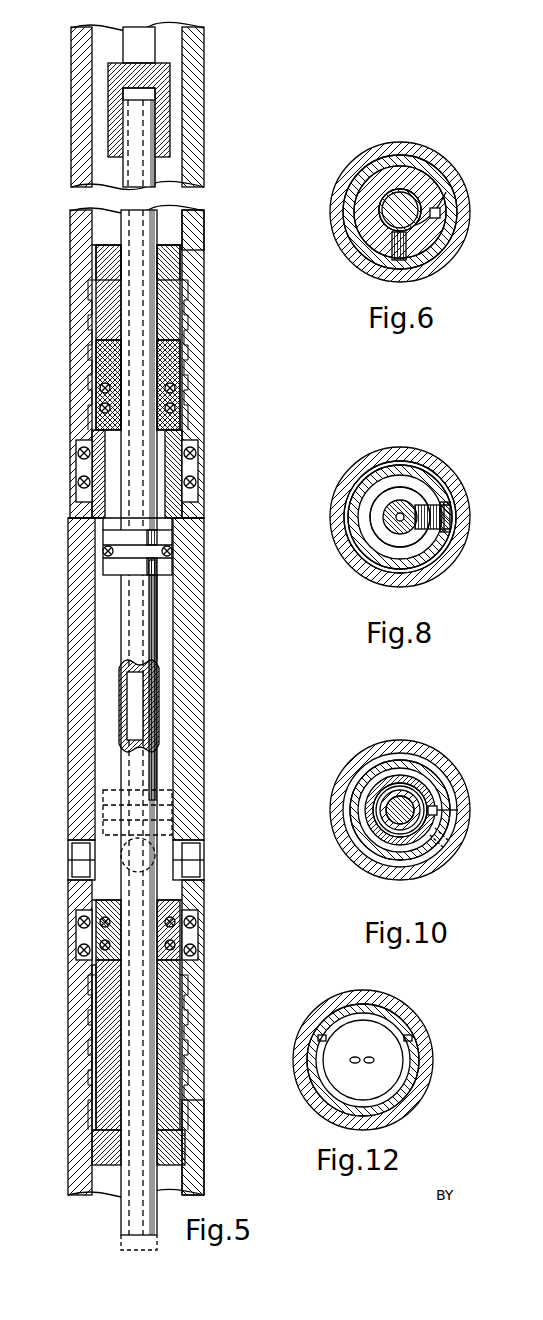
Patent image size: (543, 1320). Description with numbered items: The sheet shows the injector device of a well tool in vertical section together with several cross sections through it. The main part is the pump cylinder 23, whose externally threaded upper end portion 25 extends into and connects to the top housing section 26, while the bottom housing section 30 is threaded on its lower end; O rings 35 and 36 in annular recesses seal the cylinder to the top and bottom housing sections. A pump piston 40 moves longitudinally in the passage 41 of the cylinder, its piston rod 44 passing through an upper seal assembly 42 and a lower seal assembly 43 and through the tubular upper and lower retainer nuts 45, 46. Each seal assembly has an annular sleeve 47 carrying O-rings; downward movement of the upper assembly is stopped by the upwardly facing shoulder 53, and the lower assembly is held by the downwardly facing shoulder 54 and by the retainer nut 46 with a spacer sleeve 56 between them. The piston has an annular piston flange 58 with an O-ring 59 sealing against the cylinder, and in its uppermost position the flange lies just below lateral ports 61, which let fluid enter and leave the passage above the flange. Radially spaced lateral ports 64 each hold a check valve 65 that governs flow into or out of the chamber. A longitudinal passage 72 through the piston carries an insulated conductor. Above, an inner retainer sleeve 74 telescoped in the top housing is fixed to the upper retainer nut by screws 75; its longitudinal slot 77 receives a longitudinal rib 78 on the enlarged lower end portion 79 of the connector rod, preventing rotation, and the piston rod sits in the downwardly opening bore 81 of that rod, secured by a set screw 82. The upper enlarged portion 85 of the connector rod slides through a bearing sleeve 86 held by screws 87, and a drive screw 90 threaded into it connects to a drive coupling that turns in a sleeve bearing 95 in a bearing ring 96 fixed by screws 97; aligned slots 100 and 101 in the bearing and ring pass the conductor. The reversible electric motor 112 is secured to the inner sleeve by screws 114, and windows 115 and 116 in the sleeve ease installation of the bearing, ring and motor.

In FIG. 5, the downwardly opening bore 81 is at (123, 114).
In FIG. 5, the screws 75 is at (196, 240).
In FIG. 5, the upper retainer nut 45 is at (175, 278).
In FIG. 5, the top housing section 26 is at (195, 290).
In FIG. 6, the top housing section 26 is at (360, 162).
In FIG. 10, the top housing section 26 is at (448, 768).
In FIG. 5, the upper seal assembly 42 is at (176, 365).
In FIG. 5, the externally threaded upper end portion 25 is at (178, 382).
In FIG. 5, the upwardly facing annular shoulder 53 is at (188, 418).
In FIG. 5, the O rings 35 is at (198, 480).
In FIG. 5, the annular sleeve 47 is at (100, 388).
In FIG. 5, the lateral ports 61 is at (92, 510).
In FIG. 5, the annular piston flange 58 is at (172, 536).
In FIG. 5, the O-ring 59 is at (172, 552).
In FIG. 5, the pump piston 40 is at (160, 600).
In FIG. 5, the longitudinal passage 41 is at (170, 625).
In FIG. 5, the pump cylinder 23 is at (190, 645).
In FIG. 5, the longitudinal passage 72 is at (165, 684).
In FIG. 8, the longitudinal passage 72 is at (410, 525).
In FIG. 5, the piston rod 44 is at (158, 770).
In FIG. 8, the piston rod 44 is at (392, 510).
In FIG. 5, the lateral ports 64 is at (190, 832).
In FIG. 5, the check valve 65 is at (185, 850).
In FIG. 5, the downwardly facing annular shoulder 54 is at (96, 906).
In FIG. 5, the lower seal assembly 43 is at (182, 900).
In FIG. 5, the O rings 36 is at (198, 950).
In FIG. 5, the spacer sleeve 56 is at (100, 1008).
In FIG. 5, the lower retainer nut 46 is at (178, 1148).
In FIG. 5, the bottom housing section 30 is at (198, 1165).
In FIG. 6, the inner retainer sleeve 74 is at (396, 150).
In FIG. 10, the inner retainer sleeve 74 is at (425, 762).
In FIG. 12, the inner retainer sleeve 74 is at (390, 1025).
In FIG. 6, the sleeve bearing 95 is at (432, 190).
In FIG. 6, the bearing ring 96 is at (366, 192).
In FIG. 6, the screws 97 is at (380, 262).
In FIG. 6, the longitudinal slot 101 is at (445, 210).
In FIG. 8, the longitudinal rib 78 is at (418, 505).
In FIG. 8, the longitudinal slot 77 is at (445, 502).
In FIG. 8, the set screw 82 is at (452, 508).
In FIG. 8, the enlarged lower end portion 79 is at (438, 568).
In FIG. 10, the drive screw 90 is at (398, 798).
In FIG. 10, the upper enlarged portion 85 is at (368, 798).
In FIG. 10, the bearing sleeve 86 is at (360, 838).
In FIG. 10, the screws 87 is at (440, 848).
In FIG. 10, the longitudinal slot 100 is at (458, 810).
In FIG. 10, the window 115 is at (375, 815).
In FIG. 12, the direct current reversible electric motor 112 is at (350, 1035).
In FIG. 12, the screws 114 is at (318, 1038).
In FIG. 12, the window 116 is at (312, 1068).